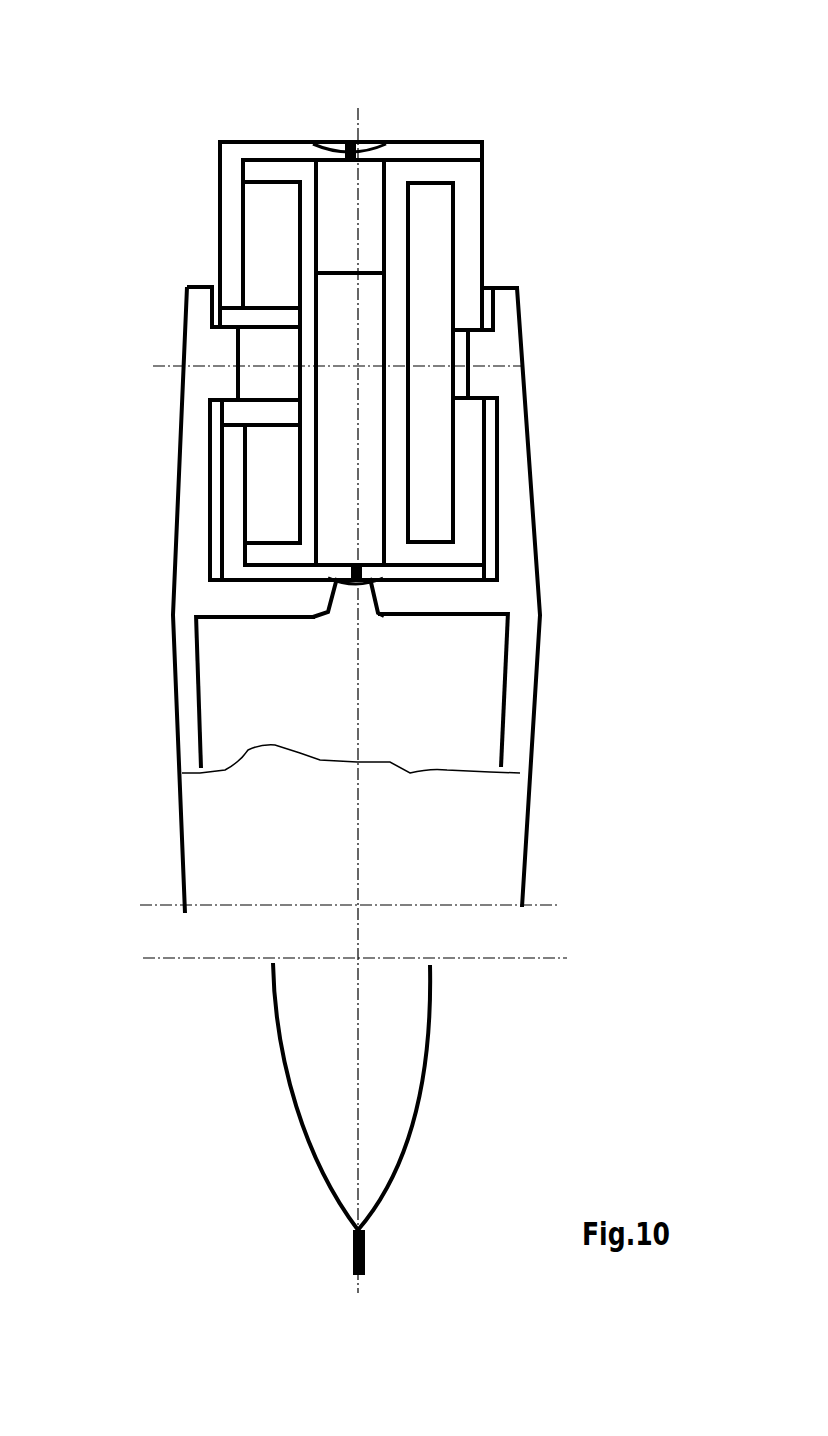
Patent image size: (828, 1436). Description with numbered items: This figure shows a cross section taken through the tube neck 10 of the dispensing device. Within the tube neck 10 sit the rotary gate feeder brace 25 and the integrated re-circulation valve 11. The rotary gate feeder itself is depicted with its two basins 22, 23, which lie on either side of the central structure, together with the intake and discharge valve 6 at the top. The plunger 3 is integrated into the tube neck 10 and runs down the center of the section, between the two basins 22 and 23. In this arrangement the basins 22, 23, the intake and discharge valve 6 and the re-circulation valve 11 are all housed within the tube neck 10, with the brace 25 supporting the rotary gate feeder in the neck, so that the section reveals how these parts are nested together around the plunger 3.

The plunger 3 is at (343, 217).
The intake and discharge valve 6 is at (350, 142).
The tube neck 10 is at (513, 593).
The integrated re-circulation valve 11 is at (357, 590).
The basin 22 is at (458, 146).
The basin 23 is at (465, 222).
The rotary gate feeder brace 25 is at (485, 355).